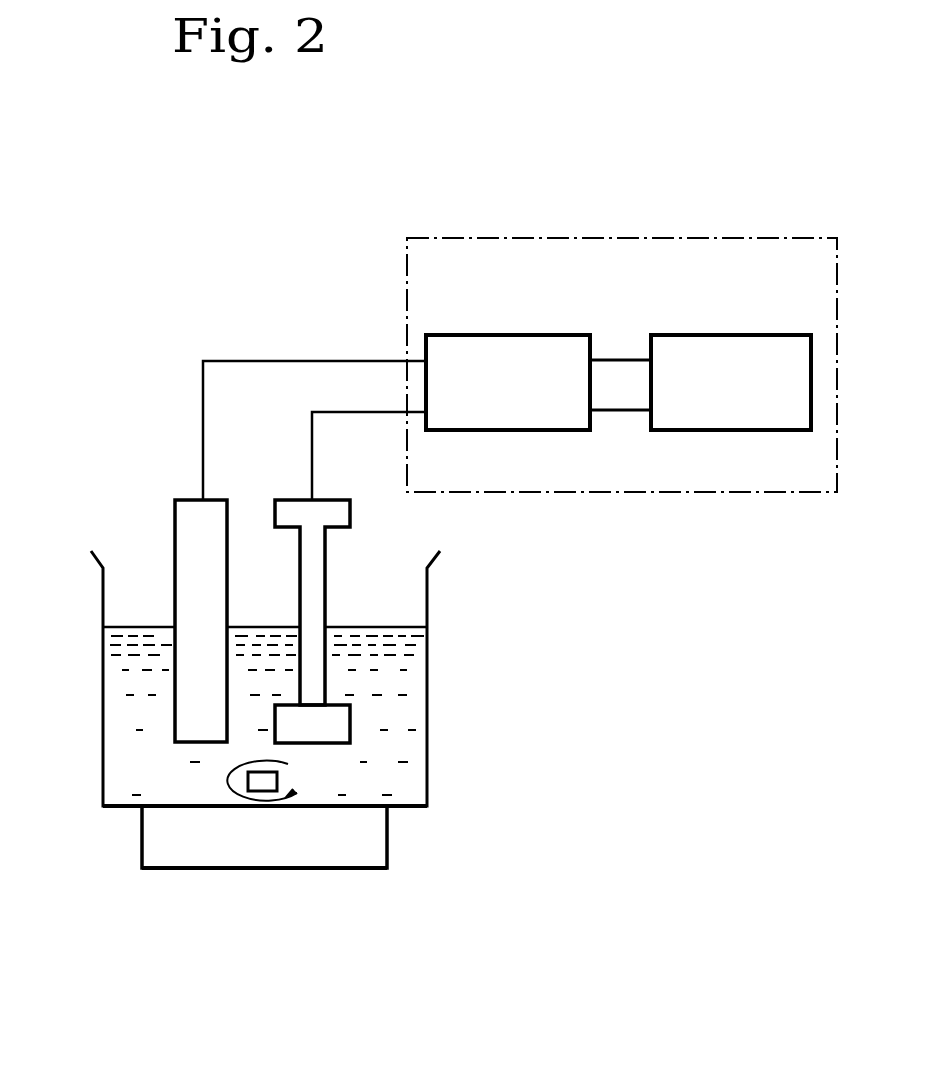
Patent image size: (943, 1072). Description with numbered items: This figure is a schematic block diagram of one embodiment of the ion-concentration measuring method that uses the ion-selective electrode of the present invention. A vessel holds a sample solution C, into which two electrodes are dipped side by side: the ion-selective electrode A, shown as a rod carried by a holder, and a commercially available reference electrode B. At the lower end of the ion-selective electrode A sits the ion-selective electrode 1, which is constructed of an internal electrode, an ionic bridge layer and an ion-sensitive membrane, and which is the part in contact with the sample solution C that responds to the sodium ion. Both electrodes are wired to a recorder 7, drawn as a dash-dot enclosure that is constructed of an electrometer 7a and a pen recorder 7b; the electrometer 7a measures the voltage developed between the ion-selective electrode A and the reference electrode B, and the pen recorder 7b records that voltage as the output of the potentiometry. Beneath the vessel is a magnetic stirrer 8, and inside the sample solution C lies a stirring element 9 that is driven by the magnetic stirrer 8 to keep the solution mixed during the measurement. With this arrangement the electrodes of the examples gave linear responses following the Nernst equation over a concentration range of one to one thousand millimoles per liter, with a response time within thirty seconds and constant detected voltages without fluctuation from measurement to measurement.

The recorder 7 is at (633, 236).
The electrometer 7a is at (513, 332).
The pen recorder 7b is at (737, 332).
The ion-selective electrode A is at (315, 597).
The reference electrode B is at (187, 556).
The sample solution C is at (405, 760).
The ion-selective electrode 1 is at (342, 725).
The magnetic stirrer 8 is at (387, 838).
The stirring element 9 is at (248, 781).